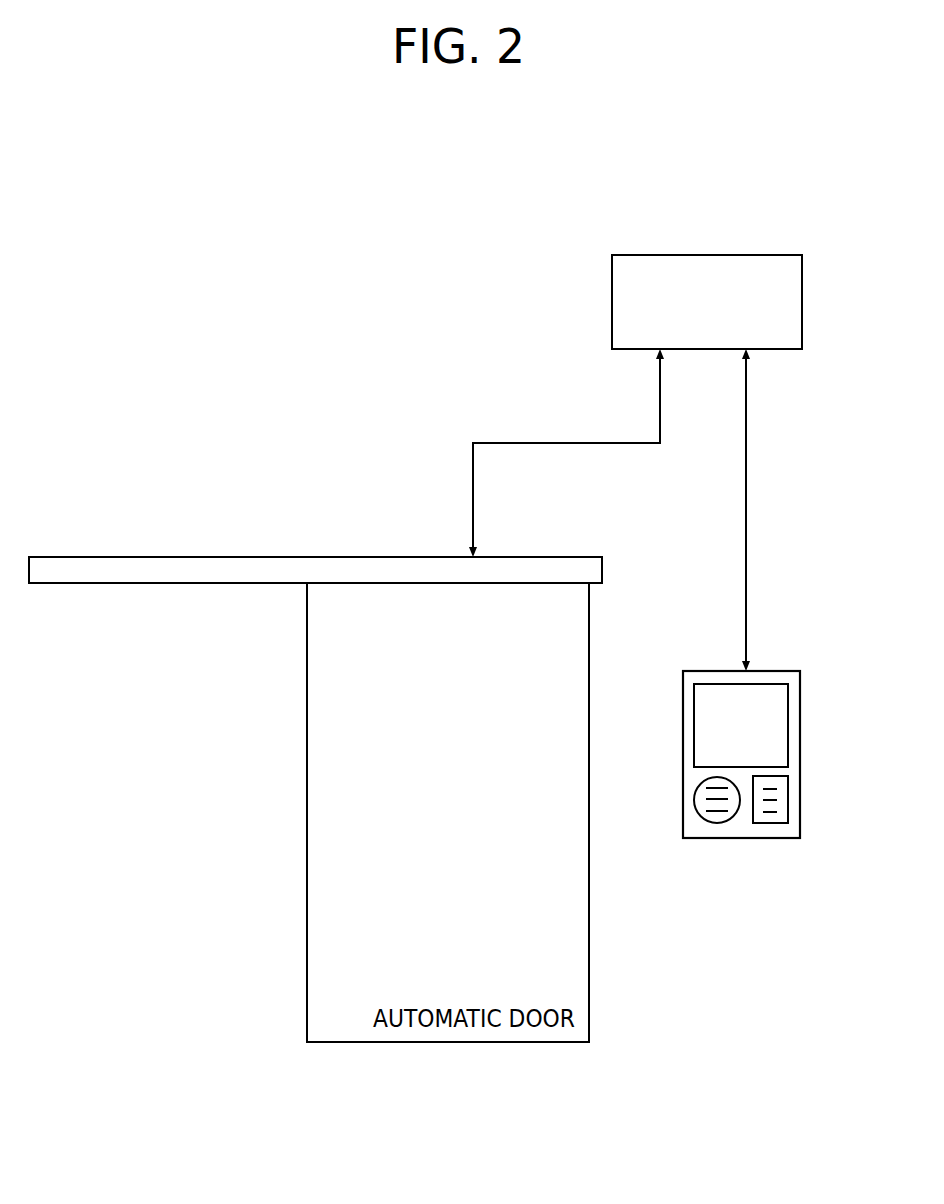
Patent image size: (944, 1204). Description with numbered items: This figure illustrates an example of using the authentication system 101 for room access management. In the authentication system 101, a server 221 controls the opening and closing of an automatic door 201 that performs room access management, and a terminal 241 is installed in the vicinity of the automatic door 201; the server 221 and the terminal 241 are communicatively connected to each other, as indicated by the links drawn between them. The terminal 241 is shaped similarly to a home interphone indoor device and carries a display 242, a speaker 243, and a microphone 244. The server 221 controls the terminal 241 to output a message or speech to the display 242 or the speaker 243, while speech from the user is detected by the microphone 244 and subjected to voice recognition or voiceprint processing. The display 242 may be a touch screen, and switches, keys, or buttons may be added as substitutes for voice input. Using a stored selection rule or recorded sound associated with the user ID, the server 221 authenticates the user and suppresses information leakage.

The authentication system 101 is at (546, 198).
The automatic door 201 is at (241, 557).
The server 221 is at (752, 255).
The terminal 241 is at (768, 676).
The display 242 is at (780, 716).
The speaker 243 is at (700, 797).
The microphone 244 is at (780, 803).